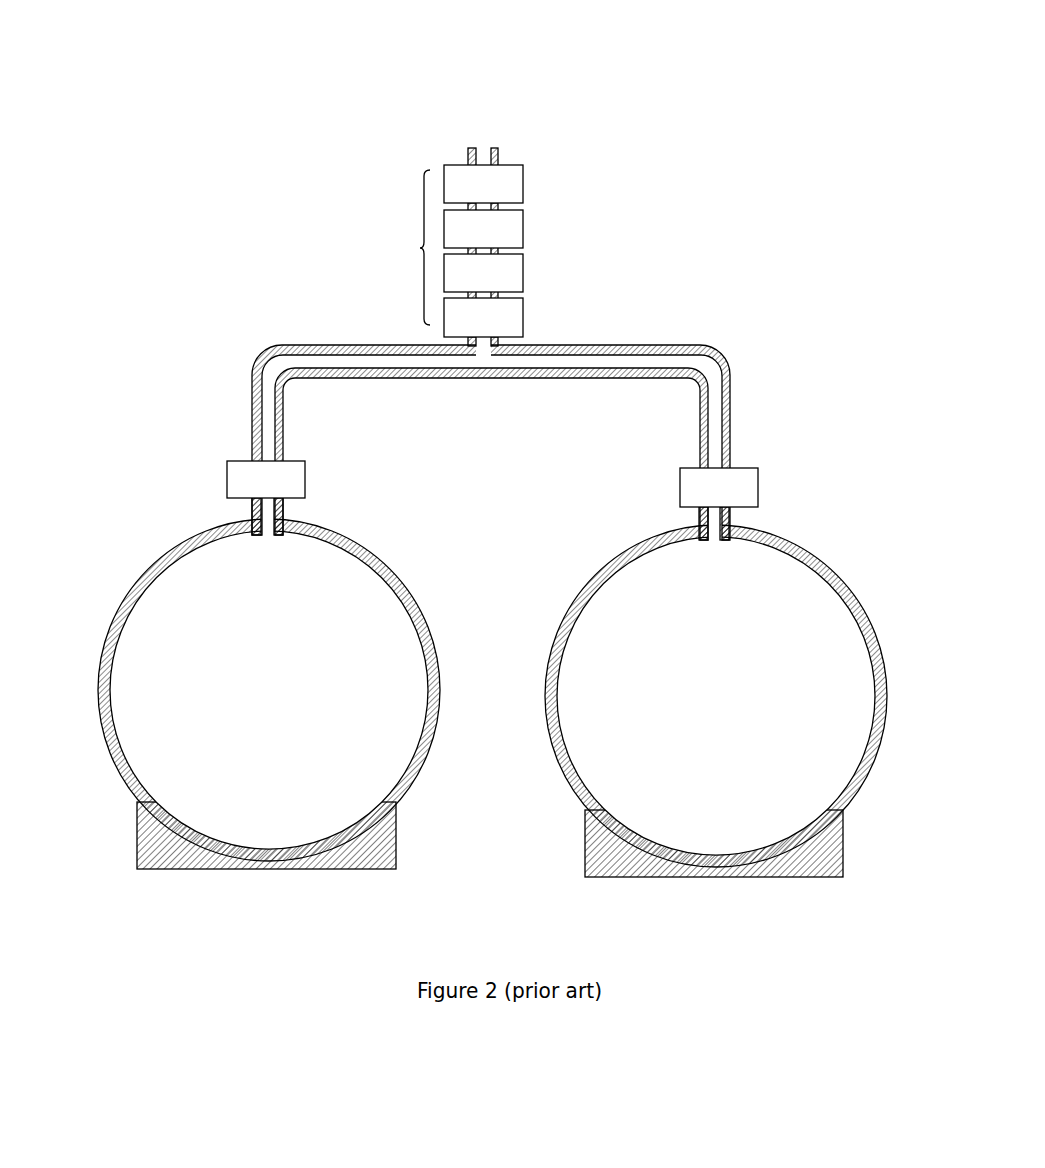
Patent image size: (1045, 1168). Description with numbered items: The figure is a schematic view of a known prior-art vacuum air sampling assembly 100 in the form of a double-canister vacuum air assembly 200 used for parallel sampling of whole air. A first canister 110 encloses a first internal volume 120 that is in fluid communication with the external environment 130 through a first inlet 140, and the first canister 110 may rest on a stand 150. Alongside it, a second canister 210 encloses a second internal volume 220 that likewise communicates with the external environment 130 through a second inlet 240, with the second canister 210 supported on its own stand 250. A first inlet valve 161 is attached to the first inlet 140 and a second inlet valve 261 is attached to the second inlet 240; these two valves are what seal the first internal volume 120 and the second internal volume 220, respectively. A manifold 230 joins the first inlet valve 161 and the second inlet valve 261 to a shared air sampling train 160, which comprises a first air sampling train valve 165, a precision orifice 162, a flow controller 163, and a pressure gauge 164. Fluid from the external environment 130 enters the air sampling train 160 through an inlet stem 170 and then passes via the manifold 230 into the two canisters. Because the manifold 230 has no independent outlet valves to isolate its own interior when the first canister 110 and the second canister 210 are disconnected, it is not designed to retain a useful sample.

The vacuum air sampling assembly 100 is at (188, 57).
The double-canister vacuum air assembly 200 is at (160, 90).
The first canister 110 is at (143, 573).
The first internal volume 120 is at (377, 750).
The external environment 130 is at (503, 441).
The first inlet 140 is at (262, 516).
The stand 150 is at (397, 846).
The air sampling train 160 is at (549, 197).
The first inlet valve 161 is at (232, 470).
The precision orifice 162 is at (524, 178).
The flow controller 163 is at (523, 225).
The pressure gauge 164 is at (518, 319).
The first air sampling train valve 165 is at (517, 281).
The inlet stem 170 is at (484, 147).
The second canister 210 is at (590, 578).
The second internal volume 220 is at (835, 745).
The manifold 230 is at (332, 350).
The second inlet 240 is at (720, 518).
The stand 250 is at (843, 855).
The second inlet valve 261 is at (758, 482).